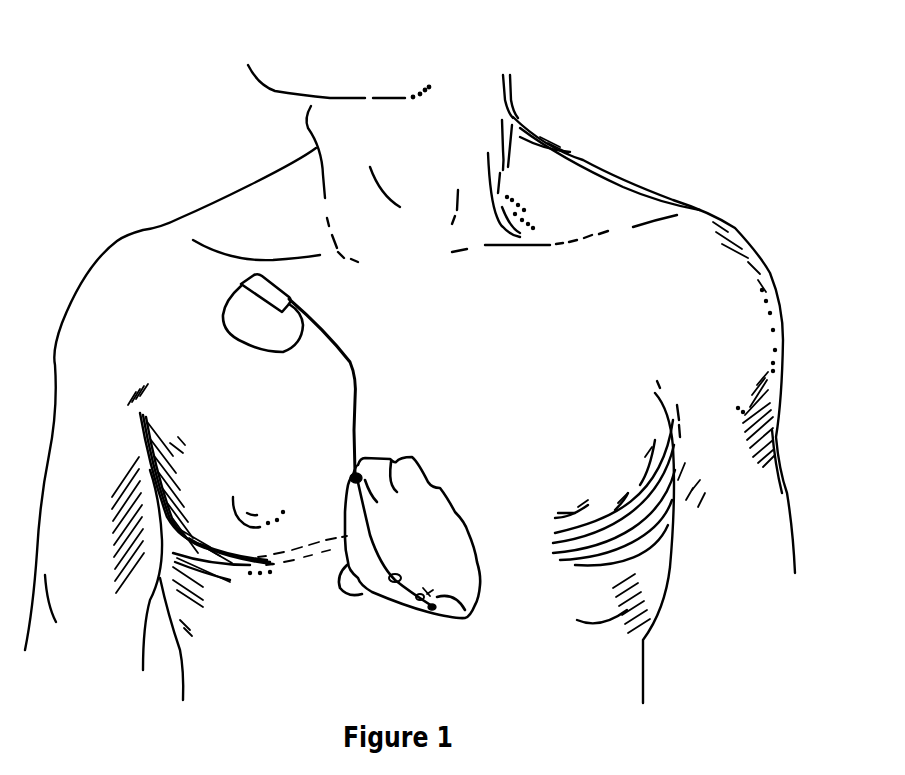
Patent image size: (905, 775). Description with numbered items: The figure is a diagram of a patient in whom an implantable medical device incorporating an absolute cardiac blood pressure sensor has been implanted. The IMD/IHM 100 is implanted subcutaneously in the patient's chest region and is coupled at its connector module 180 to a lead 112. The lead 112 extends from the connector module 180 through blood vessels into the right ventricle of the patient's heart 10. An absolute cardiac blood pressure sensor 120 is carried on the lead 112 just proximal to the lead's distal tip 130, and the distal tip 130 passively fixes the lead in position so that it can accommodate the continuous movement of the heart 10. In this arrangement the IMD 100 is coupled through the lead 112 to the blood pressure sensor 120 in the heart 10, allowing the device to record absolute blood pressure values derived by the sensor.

The heart 10 is at (432, 486).
The IMD/IHM 100 is at (260, 352).
The lead 112 is at (350, 347).
The absolute cardiac blood pressure sensor 120 is at (398, 574).
The distal tip 130 is at (463, 620).
The connector module 180 is at (258, 275).